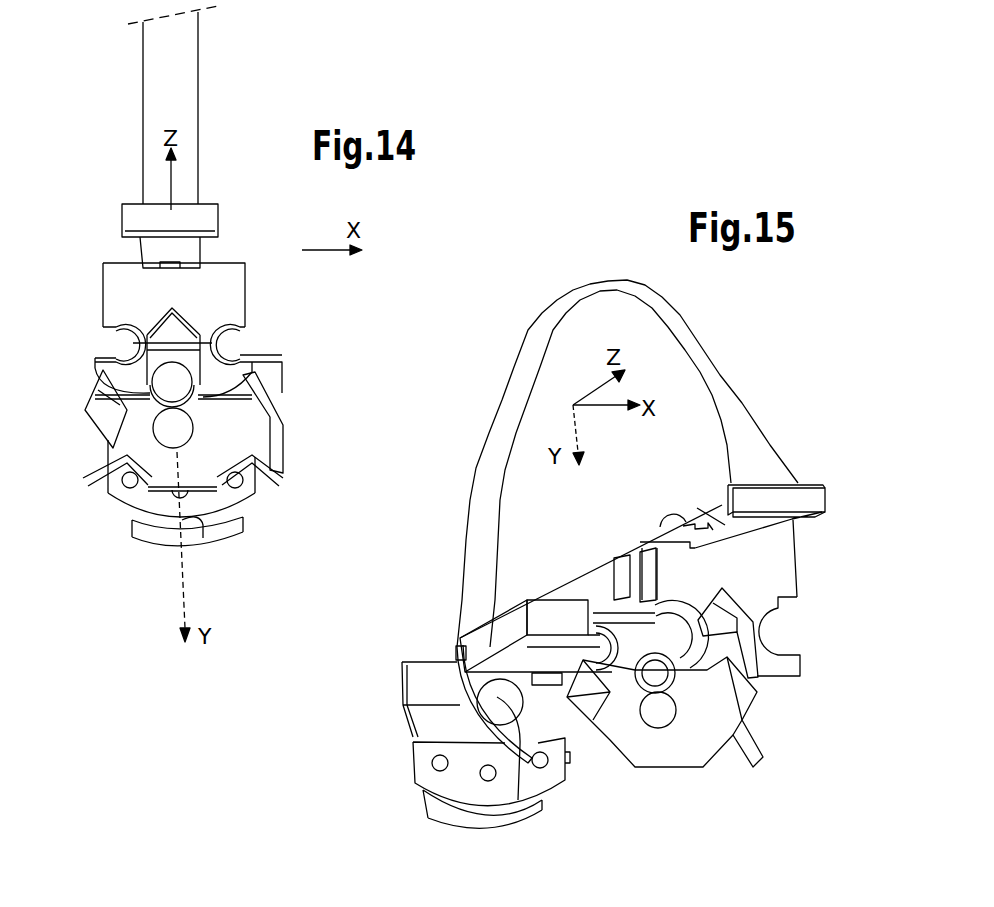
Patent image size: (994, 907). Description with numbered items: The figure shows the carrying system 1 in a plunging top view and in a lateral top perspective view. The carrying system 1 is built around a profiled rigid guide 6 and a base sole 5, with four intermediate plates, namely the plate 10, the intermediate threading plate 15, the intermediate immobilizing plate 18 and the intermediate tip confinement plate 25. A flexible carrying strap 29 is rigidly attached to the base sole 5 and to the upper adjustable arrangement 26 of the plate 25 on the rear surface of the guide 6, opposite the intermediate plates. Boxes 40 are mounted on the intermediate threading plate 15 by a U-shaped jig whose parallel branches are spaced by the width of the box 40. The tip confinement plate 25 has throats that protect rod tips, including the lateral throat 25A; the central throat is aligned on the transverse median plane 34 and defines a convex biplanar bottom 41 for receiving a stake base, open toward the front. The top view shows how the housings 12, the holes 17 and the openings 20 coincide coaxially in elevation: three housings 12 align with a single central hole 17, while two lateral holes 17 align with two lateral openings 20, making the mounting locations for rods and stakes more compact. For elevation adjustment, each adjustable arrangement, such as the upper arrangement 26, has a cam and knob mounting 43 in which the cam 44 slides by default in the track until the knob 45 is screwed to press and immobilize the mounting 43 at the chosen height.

In FIG. 14, the carrying system 1 is at (278, 73).
In FIG. 14, the base sole 5 is at (158, 532).
In FIG. 15, the base sole 5 is at (440, 803).
In FIG. 14, the profiled rigid guide 6 is at (188, 250).
In FIG. 15, the profiled rigid guide 6 is at (720, 484).
In FIG. 14, the intermediate plate 10 is at (252, 492).
In FIG. 15, the intermediate plate 10 is at (423, 778).
In FIG. 14, the housings 12 is at (110, 483).
In FIG. 15, the housings 12 is at (427, 758).
In FIG. 15, the intermediate threading plate 15 is at (465, 687).
In FIG. 15, the holes 17 is at (518, 800).
In FIG. 14, the intermediate immobilizing plate 18 is at (105, 432).
In FIG. 15, the intermediate immobilizing plate 18 is at (705, 743).
In FIG. 14, the openings 20 is at (186, 428).
In FIG. 15, the openings 20 is at (667, 717).
In FIG. 14, the intermediate tip confinement plate 25 is at (115, 262).
In FIG. 15, the intermediate tip confinement plate 25 is at (788, 580).
In FIG. 14, the throat 25A is at (196, 308).
In FIG. 15, the throat 25A is at (782, 623).
In FIG. 15, the upper adjustable arrangement 26 is at (673, 517).
In FIG. 14, the carrying strap 29 is at (155, 62).
In FIG. 15, the carrying strap 29 is at (500, 413).
In FIG. 14, the transverse median plane 34 is at (203, 525).
In FIG. 15, the box 40 is at (497, 633).
In FIG. 14, the convex biplanar bottom 41 is at (160, 308).
In FIG. 15, the cam and knob mounting 43 is at (700, 500).
In FIG. 15, the cam 44 is at (683, 542).
In FIG. 15, the knob 45 is at (792, 525).